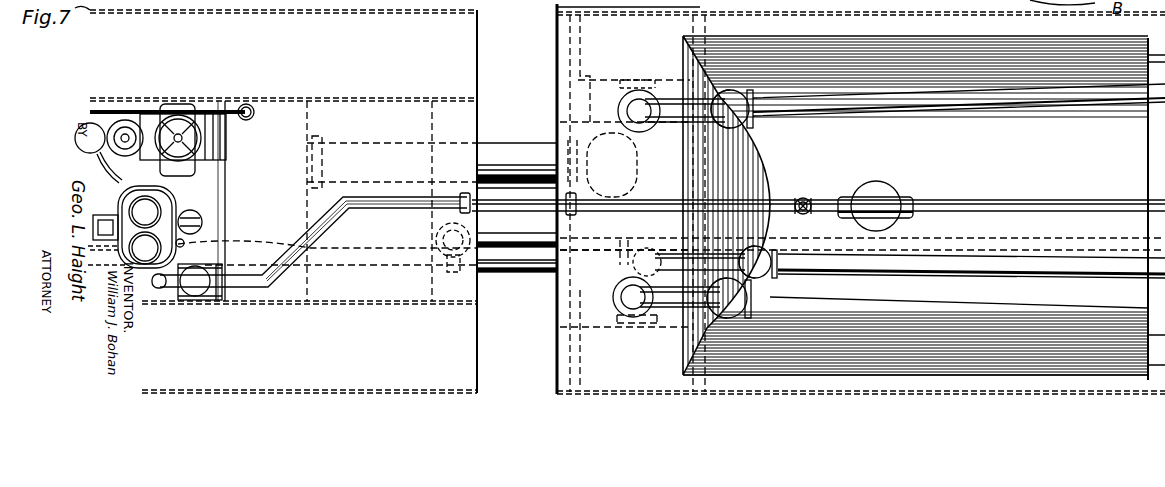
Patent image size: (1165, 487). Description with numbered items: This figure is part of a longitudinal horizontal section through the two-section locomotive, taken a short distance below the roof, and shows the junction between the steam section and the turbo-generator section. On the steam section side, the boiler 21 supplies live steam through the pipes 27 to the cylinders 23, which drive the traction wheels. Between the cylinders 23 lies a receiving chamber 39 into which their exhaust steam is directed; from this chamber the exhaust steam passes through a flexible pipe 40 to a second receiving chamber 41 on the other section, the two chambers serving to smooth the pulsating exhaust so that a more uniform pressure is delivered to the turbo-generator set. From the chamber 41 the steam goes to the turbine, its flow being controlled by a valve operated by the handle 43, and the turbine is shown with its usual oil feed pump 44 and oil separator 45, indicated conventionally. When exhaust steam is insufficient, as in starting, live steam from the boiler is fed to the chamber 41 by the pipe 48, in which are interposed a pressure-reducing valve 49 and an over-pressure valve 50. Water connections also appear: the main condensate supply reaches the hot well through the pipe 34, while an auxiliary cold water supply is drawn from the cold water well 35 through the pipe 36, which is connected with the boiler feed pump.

The boiler 21 is at (818, 206).
The cylinders 23 is at (558, 5).
The pipes 27 is at (1108, 110).
The pipe 34 is at (248, 243).
The cold water well 35 is at (474, 60).
The pipe 36 is at (516, 241).
The receiving chamber 39 is at (618, 165).
The flexible pipe 40 is at (507, 149).
The second receiving chamber 41 is at (351, 201).
The handle 43 is at (160, 158).
The oil feed pump 44 is at (166, 208).
The oil separator 45 is at (112, 176).
The pipe 48 is at (402, 209).
The pressure-reducing valve 49 is at (187, 292).
The over-pressure valve 50 is at (212, 298).